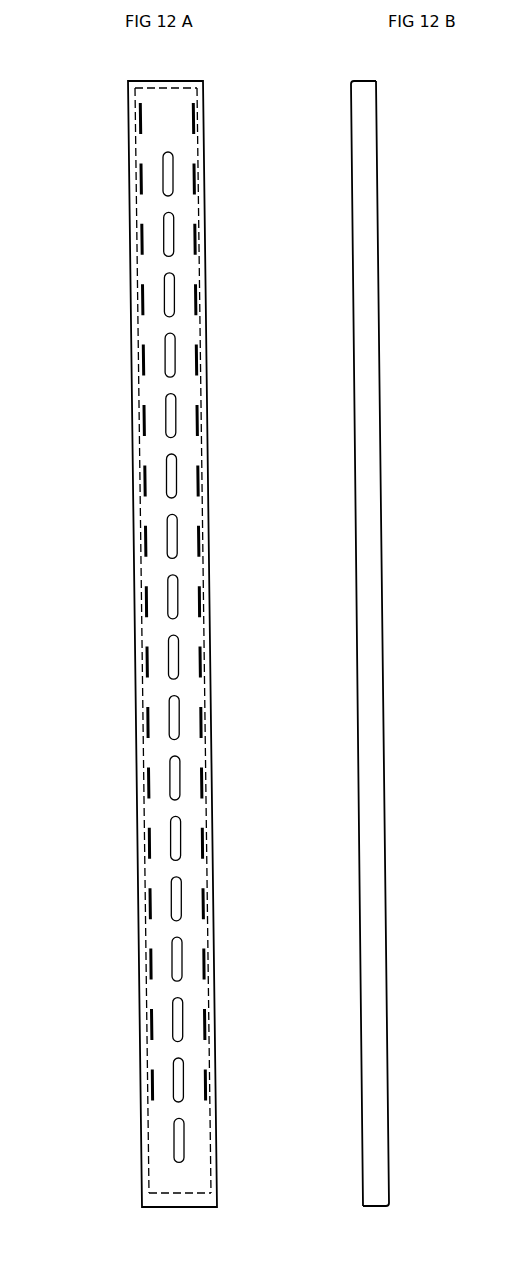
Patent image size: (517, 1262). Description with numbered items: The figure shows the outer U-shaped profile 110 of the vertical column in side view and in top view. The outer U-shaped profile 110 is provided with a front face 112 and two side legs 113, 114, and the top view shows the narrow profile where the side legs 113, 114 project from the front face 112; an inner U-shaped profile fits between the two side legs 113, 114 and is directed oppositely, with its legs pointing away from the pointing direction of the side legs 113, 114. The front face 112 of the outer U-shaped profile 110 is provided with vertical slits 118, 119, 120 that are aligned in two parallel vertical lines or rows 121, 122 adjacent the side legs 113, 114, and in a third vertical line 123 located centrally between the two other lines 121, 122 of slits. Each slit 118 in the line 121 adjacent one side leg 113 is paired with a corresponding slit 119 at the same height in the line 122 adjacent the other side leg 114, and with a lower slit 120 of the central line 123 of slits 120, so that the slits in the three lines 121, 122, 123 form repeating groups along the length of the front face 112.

In FIG. 12A, the outer U-shaped profile 110 is at (100, 114).
In FIG. 12A, the front face 112 is at (185, 178).
In FIG. 12B, the side leg 113 is at (363, 155).
In FIG. 12B, the side leg 114 is at (430, 643).
In FIG. 12A, the vertical slit 118 is at (200, 295).
In FIG. 12A, the vertical slit 119 is at (140, 297).
In FIG. 12A, the vertical slit 120 is at (175, 393).
In FIG. 12A, the vertical line of slits 121 is at (132, 1021).
In FIG. 12A, the vertical line of slits 122 is at (227, 1021).
In FIG. 12A, the central vertical line of slits 123 is at (193, 1103).